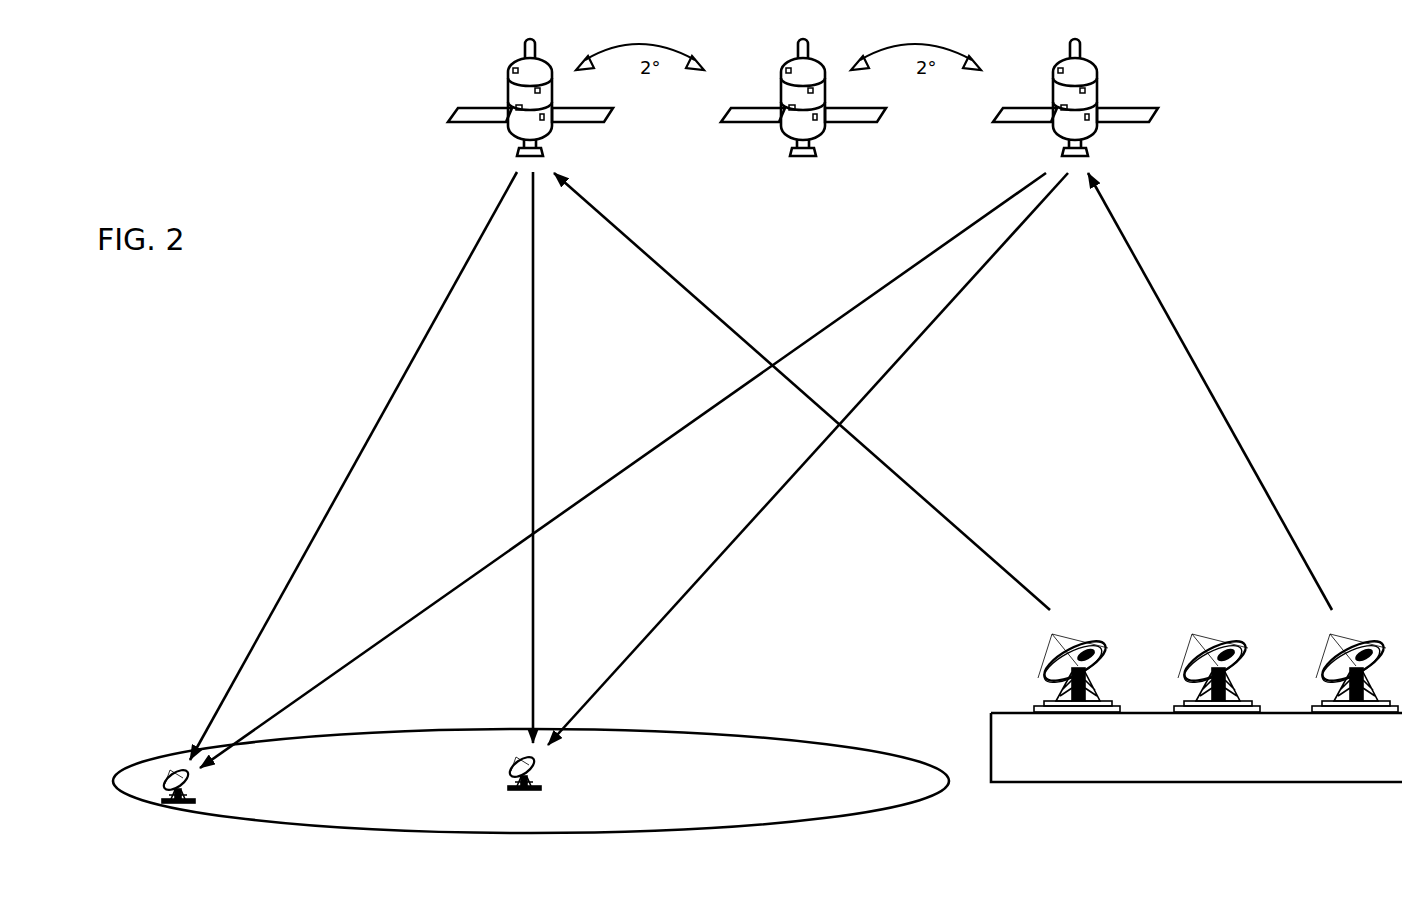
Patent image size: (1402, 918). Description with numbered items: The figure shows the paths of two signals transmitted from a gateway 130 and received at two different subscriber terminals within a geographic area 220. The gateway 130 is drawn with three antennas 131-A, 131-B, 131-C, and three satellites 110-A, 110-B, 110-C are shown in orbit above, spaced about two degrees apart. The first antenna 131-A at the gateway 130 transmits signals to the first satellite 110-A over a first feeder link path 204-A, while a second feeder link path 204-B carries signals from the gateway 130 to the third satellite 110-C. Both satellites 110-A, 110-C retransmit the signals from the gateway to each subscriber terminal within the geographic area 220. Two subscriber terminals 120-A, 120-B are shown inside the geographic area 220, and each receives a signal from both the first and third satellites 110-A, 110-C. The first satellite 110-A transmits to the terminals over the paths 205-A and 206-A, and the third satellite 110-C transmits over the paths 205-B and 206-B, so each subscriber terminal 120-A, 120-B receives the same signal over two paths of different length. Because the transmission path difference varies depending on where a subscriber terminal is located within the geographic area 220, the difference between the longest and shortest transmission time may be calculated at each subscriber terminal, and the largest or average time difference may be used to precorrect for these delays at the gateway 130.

The first satellite 110-A is at (520, 92).
The second satellite 110-B is at (793, 92).
The third satellite 110-C is at (1065, 92).
The first subscriber terminal 120-A is at (195, 789).
The second subscriber terminal 120-B is at (541, 778).
The gateway 130 is at (1196, 747).
The first antenna 131-A is at (1043, 680).
The second antenna 131-B is at (1183, 680).
The third antenna 131-C is at (1321, 680).
The first feeder link path 204-A is at (884, 466).
The feeder link path 204-B is at (1186, 345).
The signal path 205-A is at (534, 399).
The signal path 205-B is at (712, 565).
The signal path 206-A is at (379, 421).
The signal path 206-B is at (697, 415).
The geographic area 220 is at (531, 781).